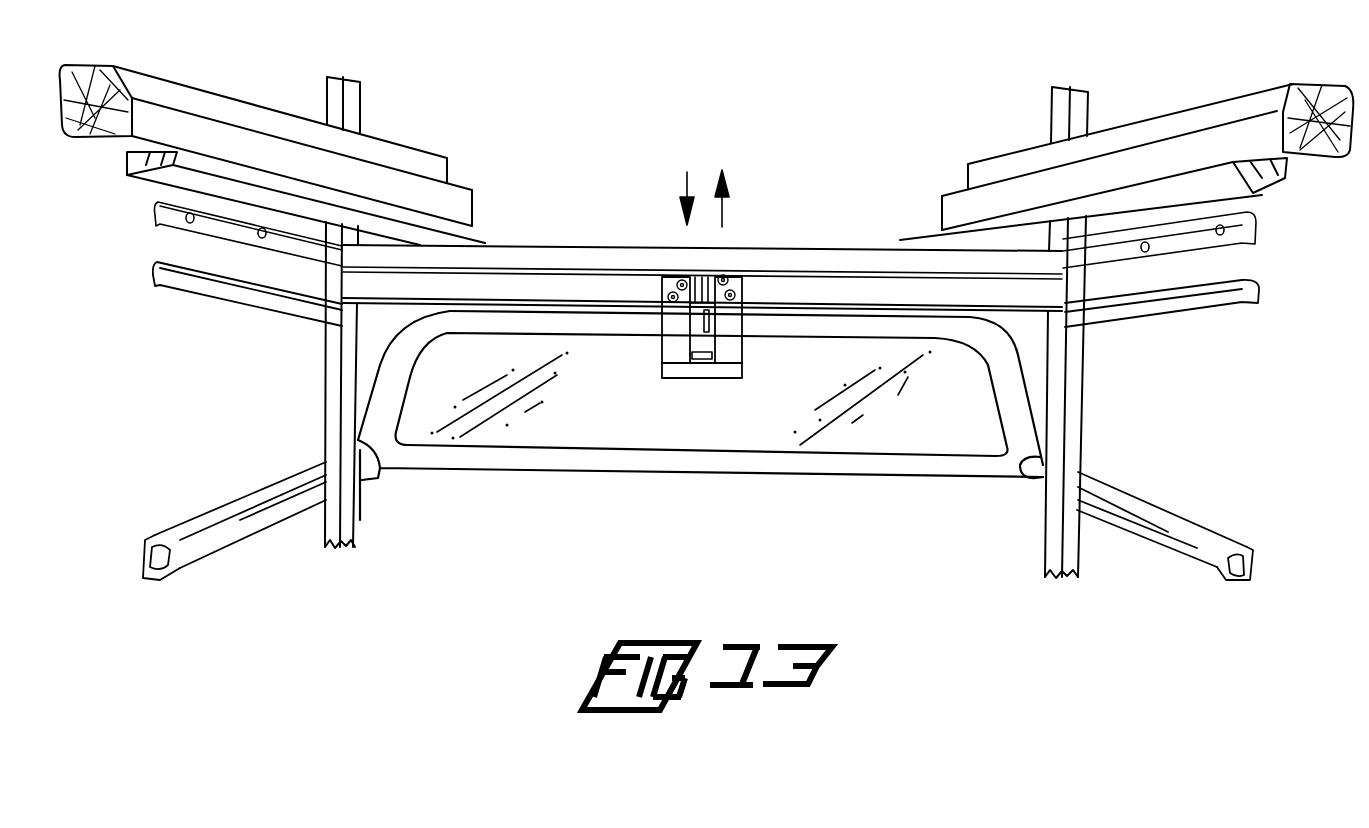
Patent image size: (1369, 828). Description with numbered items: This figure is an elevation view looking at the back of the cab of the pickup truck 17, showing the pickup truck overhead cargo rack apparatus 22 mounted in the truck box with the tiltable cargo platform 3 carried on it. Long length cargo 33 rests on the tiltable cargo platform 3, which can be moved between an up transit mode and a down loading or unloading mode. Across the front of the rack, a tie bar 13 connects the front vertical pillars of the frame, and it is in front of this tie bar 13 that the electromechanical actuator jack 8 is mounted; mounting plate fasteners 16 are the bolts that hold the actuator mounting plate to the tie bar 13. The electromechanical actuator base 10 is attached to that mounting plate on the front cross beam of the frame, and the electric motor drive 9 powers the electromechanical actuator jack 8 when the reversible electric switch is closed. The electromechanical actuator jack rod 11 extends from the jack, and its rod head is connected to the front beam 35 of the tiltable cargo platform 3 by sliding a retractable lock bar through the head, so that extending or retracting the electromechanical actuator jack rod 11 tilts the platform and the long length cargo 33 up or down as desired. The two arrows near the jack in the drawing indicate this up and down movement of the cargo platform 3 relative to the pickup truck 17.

The tiltable cargo platform 3 is at (482, 233).
The electromechanical actuator jack 8 is at (703, 330).
The electric motor drive 9 is at (690, 358).
The electromechanical actuator base 10 is at (707, 368).
The electromechanical actuator jack rod 11 is at (702, 277).
The tie bar 13 is at (810, 257).
The mounting plate fasteners 16 is at (682, 285).
The pickup truck 17 is at (784, 413).
The pickup truck overhead cargo rack apparatus 22 is at (237, 297).
The long length cargo 33 is at (424, 160).
The front beam of cargo tilt rack 35 is at (548, 257).